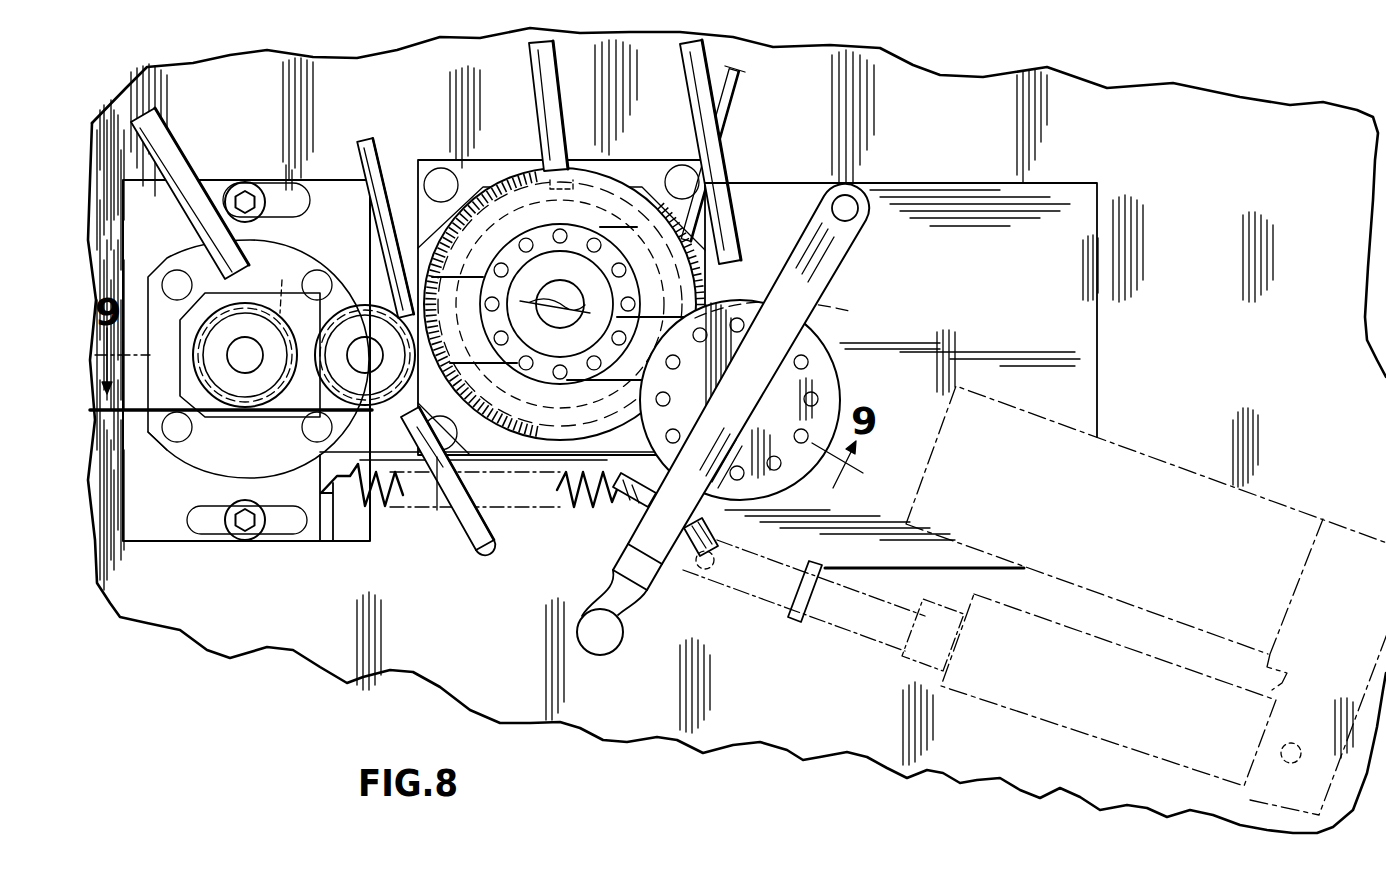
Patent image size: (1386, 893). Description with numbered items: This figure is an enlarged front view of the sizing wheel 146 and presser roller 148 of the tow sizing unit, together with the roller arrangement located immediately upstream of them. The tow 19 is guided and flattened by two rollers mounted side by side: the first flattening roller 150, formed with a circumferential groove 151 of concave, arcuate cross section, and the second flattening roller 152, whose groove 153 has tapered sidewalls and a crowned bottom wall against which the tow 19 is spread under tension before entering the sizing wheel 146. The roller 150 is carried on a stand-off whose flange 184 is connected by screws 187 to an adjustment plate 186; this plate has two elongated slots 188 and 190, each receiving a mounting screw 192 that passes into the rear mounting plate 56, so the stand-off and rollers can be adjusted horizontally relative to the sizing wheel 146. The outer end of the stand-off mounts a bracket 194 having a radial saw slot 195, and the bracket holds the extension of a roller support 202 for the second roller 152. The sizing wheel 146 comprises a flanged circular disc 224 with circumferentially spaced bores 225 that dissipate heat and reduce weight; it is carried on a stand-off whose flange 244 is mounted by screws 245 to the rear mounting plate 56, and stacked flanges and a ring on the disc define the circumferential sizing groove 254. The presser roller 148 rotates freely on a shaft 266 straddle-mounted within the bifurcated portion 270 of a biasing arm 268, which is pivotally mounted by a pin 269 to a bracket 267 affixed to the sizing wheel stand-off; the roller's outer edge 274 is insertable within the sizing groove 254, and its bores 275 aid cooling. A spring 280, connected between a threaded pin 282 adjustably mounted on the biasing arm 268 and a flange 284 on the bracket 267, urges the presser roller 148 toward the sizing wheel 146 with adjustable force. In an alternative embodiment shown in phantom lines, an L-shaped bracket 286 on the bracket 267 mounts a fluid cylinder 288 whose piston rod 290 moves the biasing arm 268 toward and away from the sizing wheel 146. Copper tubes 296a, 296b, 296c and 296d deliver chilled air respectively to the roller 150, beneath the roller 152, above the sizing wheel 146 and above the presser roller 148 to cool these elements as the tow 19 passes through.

The rear mounting plate 56 is at (880, 72).
The tow 19 is at (110, 415).
The sizing wheel 146 is at (616, 192).
The presser roller 148 is at (700, 333).
The flattening roller 150 is at (248, 390).
The circumferential groove 151 is at (283, 283).
The flattening roller 152 is at (358, 302).
The groove 153 is at (492, 272).
The flange 184 is at (205, 449).
The adjustment plate 186 is at (333, 179).
The screws 187 is at (175, 278).
The elongated slot 188 is at (300, 190).
The elongated slot 190 is at (288, 536).
The mounting screw 192 is at (247, 182).
The bracket 194 is at (250, 465).
The radial saw slot 195 is at (190, 355).
The roller support 202 is at (333, 397).
The flanged circular disc 224 is at (507, 243).
The bores 225 is at (593, 372).
The flange 244 is at (485, 162).
The screws 245 is at (438, 167).
The sizing groove 254 is at (546, 425).
The shaft 266 is at (740, 393).
The bracket 267 is at (976, 193).
The biasing arm 268 is at (842, 270).
The pin 269 is at (853, 215).
The bifurcated portion 270 is at (798, 316).
The outer edge 274 is at (838, 374).
The bores 275 is at (776, 468).
The spring 280 is at (542, 508).
The threaded pin 282 is at (636, 500).
The flange 284 is at (335, 528).
The L-shaped bracket 286 is at (1187, 469).
The fluid cylinder 288 is at (1075, 738).
The piston rod 290 is at (857, 627).
The copper tube 296a is at (170, 133).
The copper tube 296b is at (373, 133).
The copper tube 296c is at (563, 85).
The copper tube 296d is at (703, 57).